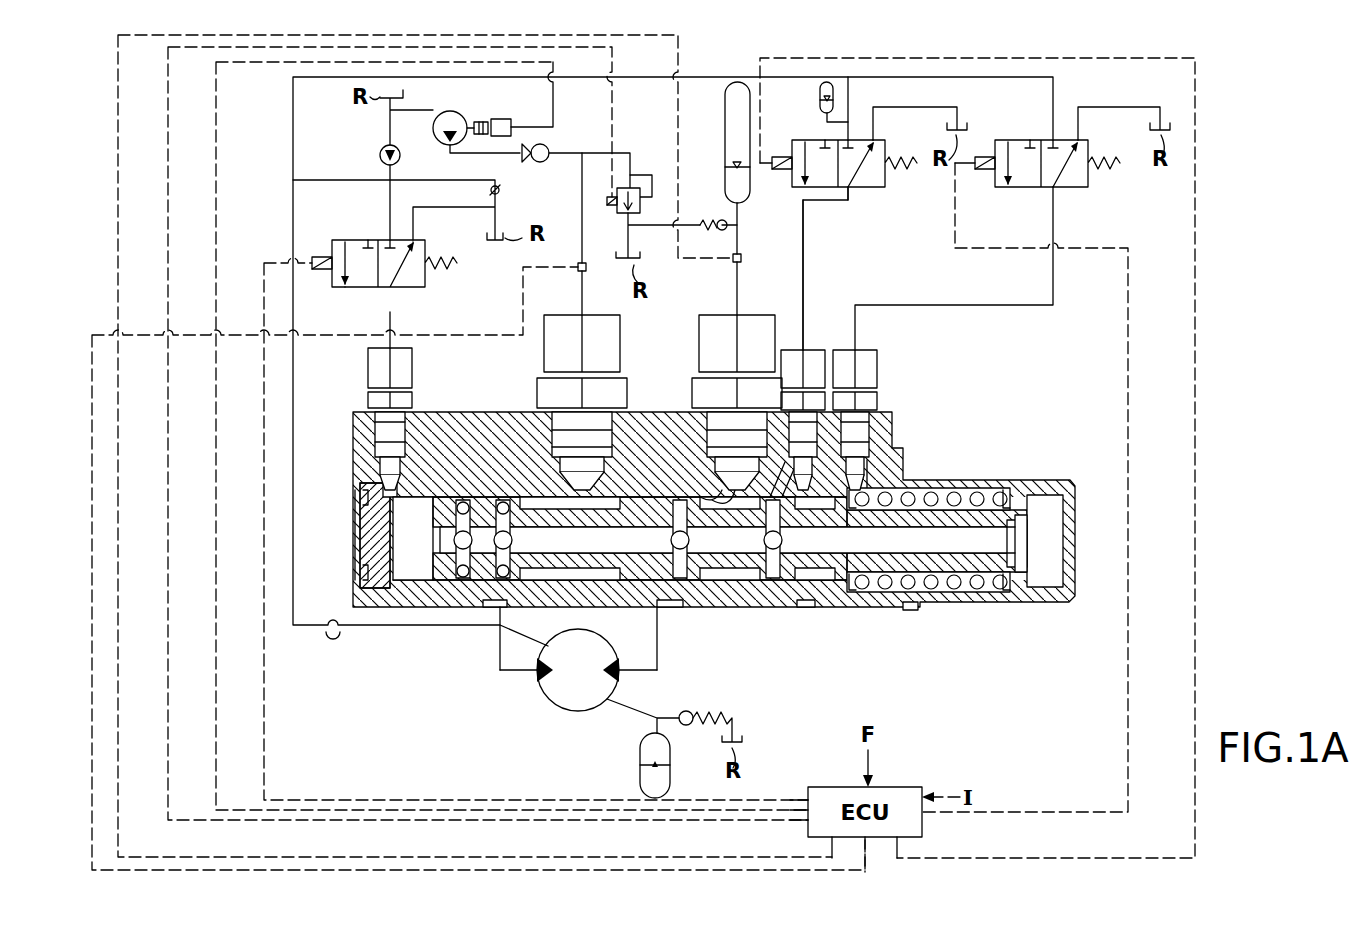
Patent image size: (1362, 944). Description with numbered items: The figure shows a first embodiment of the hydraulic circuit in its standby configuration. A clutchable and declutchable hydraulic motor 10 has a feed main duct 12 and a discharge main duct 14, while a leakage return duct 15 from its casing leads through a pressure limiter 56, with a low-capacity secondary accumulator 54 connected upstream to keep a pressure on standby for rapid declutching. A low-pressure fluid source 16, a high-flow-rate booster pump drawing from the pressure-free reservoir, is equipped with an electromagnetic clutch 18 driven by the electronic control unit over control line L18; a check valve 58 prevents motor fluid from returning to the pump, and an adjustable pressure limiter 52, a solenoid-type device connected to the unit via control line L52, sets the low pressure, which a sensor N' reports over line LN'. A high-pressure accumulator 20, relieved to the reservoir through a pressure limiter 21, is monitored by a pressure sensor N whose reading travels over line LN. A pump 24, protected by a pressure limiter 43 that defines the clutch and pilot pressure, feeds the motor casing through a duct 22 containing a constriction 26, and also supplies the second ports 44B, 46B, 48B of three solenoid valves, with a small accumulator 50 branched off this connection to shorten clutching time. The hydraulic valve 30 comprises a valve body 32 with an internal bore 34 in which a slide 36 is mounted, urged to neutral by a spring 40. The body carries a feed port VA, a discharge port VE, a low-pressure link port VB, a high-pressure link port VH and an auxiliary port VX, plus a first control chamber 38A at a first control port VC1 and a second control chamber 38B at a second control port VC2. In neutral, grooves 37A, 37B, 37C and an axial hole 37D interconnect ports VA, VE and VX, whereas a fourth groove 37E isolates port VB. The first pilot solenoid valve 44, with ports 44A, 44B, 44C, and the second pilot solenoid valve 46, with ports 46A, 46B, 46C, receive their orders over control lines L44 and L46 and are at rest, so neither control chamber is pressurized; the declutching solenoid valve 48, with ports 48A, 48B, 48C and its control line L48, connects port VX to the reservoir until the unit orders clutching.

The hydraulic motor 10 is at (573, 705).
The feed main duct 12 is at (646, 673).
The discharge main duct 14 is at (512, 673).
The leakage return duct 15 is at (637, 716).
The low-pressure fluid source 16 is at (458, 115).
The electromagnetic clutch 18 is at (505, 119).
The accumulator 20 is at (725, 113).
The pressure limiter 21 is at (715, 220).
The duct 22 is at (394, 630).
The pump 24 is at (380, 154).
The constriction 26 is at (333, 640).
The hydraulic valve 30 is at (714, 451).
The valve body 32 is at (812, 603).
The internal bore 34 is at (791, 612).
The slide 36 is at (922, 515).
The groove 37A is at (710, 578).
The groove 37B is at (465, 596).
The groove 37C is at (790, 562).
The axial hole 37D is at (733, 540).
The fourth groove 37E is at (625, 497).
The first control chamber 38A is at (417, 520).
The second control chamber 38B is at (1040, 541).
The spring 40 is at (960, 495).
The pressure limiter 43 is at (499, 196).
The first pilot solenoid valve 44 is at (412, 261).
The first port 44A is at (378, 288).
The second port 44B is at (390, 239).
The third port 44C is at (415, 242).
The second pilot solenoid valve 46 is at (1062, 169).
The first port 46A is at (1052, 190).
The second port 46B is at (1052, 139).
The third port 46C is at (1079, 140).
The declutching solenoid valve 48 is at (863, 213).
The first port 48A is at (848, 190).
The second port 48B is at (825, 140).
The third port 48C is at (874, 140).
The accumulator 50 is at (820, 90).
The adjustable pressure limiter 52 is at (600, 200).
The secondary accumulator 54 is at (640, 777).
The pressure limiter 56 is at (692, 711).
The check valve 58 is at (562, 140).
The control line L18 is at (218, 199).
The control line L44 is at (421, 800).
The control line L46 is at (1043, 812).
The control line L48 is at (1196, 449).
The control line L52 is at (372, 822).
The line LN is at (475, 446).
The line LN' is at (478, 568).
The pressure sensor N is at (720, 284).
The sensor N' is at (597, 234).
The feed port VA is at (665, 610).
The low-pressure link port VB is at (575, 492).
The first control port VC1 is at (383, 478).
The second control port VC2 is at (861, 475).
The discharge port VE is at (497, 626).
The high-pressure link port VH is at (692, 490).
The auxiliary port VX is at (786, 468).